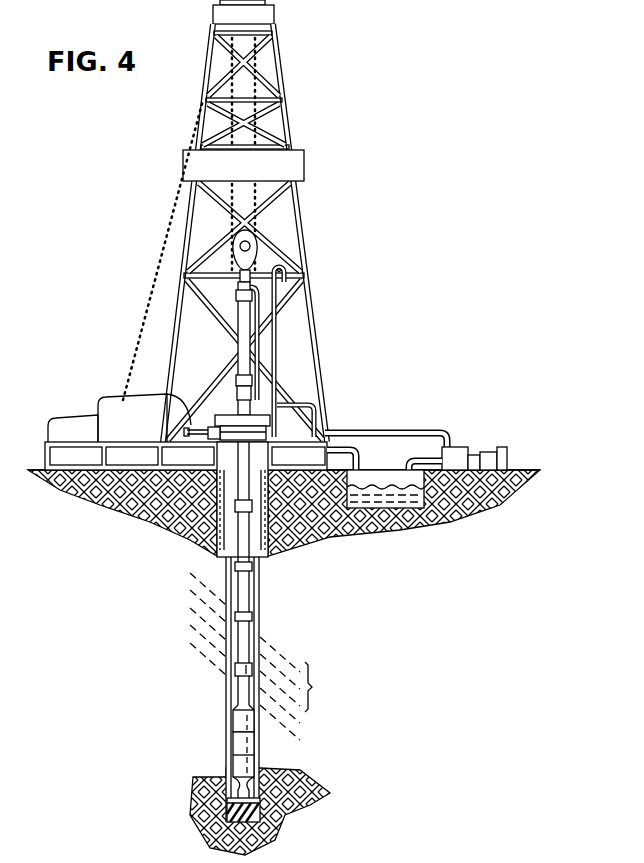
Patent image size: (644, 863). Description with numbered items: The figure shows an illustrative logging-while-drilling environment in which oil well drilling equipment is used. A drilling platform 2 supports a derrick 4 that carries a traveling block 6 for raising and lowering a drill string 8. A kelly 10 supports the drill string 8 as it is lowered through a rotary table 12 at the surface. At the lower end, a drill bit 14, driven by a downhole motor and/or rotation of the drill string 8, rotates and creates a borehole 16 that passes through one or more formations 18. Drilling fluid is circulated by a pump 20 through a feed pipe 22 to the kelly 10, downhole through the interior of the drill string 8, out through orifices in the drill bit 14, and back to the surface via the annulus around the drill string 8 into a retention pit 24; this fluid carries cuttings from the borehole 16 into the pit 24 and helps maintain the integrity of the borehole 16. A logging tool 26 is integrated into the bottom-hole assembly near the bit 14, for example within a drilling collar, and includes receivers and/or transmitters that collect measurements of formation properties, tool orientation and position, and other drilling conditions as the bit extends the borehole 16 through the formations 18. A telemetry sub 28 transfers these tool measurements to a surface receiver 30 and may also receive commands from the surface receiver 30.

The drilling platform 2 is at (45, 458).
The derrick 4 is at (286, 88).
The traveling block 6 is at (258, 250).
The drill string 8 is at (250, 590).
The kelly 10 is at (232, 305).
The rotary table 12 is at (228, 403).
The drill bit 14 is at (262, 805).
The borehole 16 is at (262, 607).
The formations 18 is at (268, 656).
The pump 20 is at (456, 447).
The feed pipe 22 is at (383, 430).
The retention pit 24 is at (378, 490).
The logging tool 26 is at (236, 745).
The telemetry sub 28 is at (238, 722).
The surface receiver 30 is at (256, 383).